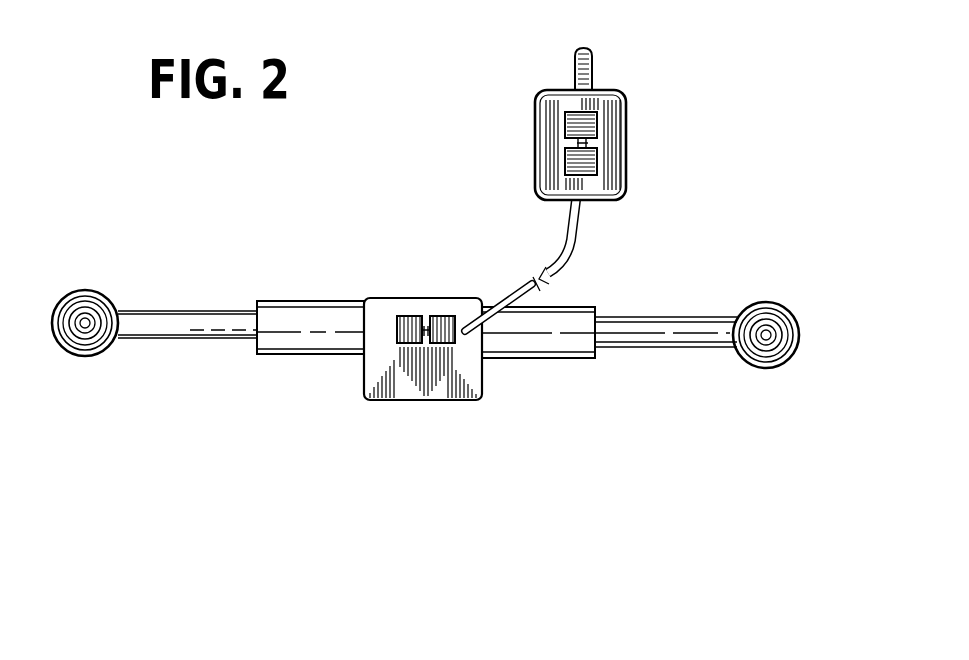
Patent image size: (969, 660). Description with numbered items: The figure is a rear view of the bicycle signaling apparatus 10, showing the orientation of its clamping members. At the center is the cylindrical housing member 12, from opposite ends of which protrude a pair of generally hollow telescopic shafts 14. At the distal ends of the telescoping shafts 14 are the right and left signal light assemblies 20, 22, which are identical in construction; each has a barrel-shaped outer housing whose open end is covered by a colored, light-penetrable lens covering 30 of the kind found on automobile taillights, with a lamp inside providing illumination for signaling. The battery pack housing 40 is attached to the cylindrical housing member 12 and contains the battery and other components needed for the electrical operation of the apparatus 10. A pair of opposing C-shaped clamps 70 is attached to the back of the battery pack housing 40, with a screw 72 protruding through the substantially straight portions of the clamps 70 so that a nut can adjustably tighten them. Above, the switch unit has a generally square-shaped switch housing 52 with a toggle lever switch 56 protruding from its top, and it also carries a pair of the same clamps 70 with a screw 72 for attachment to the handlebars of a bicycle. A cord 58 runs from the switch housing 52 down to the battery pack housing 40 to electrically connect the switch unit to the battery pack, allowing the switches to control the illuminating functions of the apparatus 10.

The bicycle signaling apparatus 10 is at (288, 199).
The cylindrical housing member 12 is at (296, 382).
The telescopic shaft 14 is at (200, 330).
The right signal light assembly 20 is at (78, 262).
The left signal light assembly 22 is at (808, 280).
The front lens covering 30 is at (70, 350).
The battery pack housing 40 is at (363, 398).
The switch housing 52 is at (612, 130).
The toggle lever switch 56 is at (592, 60).
The cord 58 is at (577, 248).
The C-shaped clamps 70 is at (565, 162).
The screw 72 is at (428, 343).